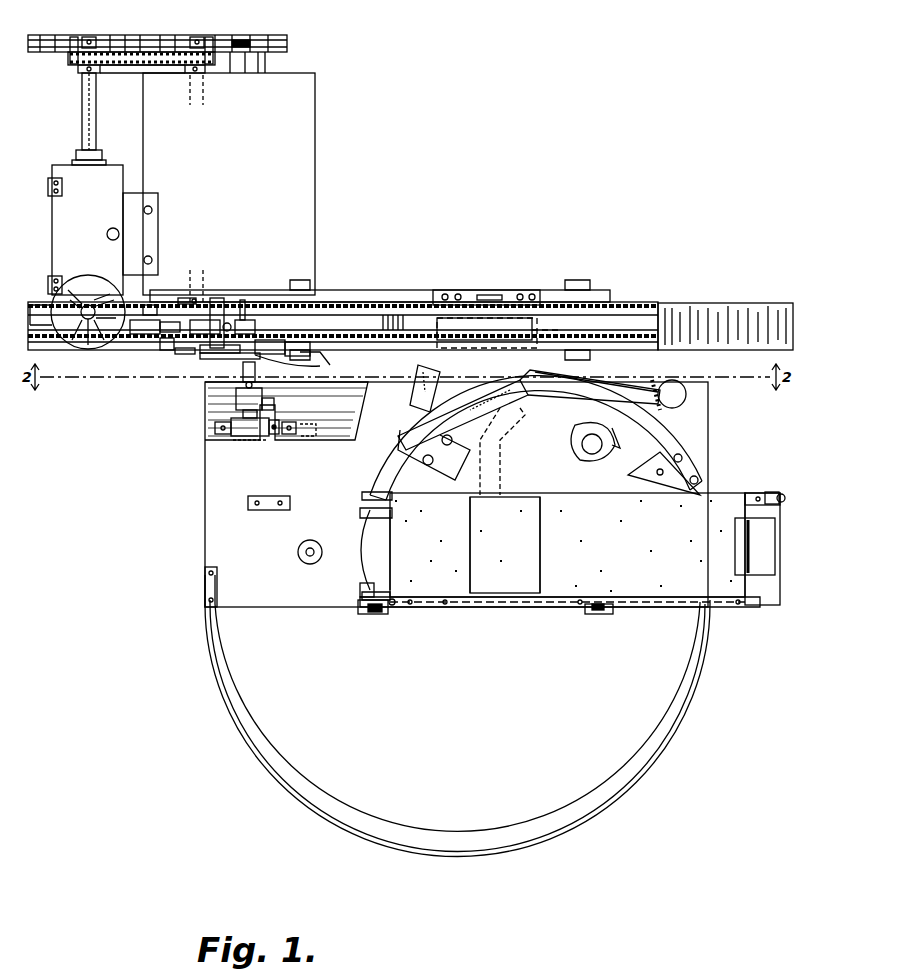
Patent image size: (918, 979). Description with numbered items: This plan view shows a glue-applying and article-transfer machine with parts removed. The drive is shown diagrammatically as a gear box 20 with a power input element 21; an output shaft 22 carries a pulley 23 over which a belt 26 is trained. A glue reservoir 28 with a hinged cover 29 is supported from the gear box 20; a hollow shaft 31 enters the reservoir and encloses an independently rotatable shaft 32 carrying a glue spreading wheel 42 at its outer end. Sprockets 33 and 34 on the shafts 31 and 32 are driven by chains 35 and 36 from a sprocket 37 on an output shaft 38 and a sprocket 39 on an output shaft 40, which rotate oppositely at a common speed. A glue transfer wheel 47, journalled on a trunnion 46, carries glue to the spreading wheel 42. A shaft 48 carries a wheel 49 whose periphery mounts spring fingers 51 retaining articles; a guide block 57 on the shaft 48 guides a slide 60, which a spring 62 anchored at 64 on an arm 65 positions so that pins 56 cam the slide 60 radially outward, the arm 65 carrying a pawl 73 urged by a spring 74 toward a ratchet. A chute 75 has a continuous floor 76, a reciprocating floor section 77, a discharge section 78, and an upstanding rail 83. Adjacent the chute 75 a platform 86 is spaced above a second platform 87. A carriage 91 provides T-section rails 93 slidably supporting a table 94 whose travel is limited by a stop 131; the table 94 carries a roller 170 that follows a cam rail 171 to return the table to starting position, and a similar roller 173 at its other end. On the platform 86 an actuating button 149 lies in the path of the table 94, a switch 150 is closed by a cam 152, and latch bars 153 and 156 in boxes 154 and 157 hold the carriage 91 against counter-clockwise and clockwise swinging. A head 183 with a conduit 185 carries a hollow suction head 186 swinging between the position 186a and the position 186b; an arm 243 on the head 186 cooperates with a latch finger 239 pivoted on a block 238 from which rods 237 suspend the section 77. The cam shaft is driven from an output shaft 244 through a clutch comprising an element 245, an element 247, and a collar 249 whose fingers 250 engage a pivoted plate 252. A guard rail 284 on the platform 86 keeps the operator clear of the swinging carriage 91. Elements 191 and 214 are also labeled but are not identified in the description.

The gear box 20 is at (315, 150).
The power input element 21 is at (287, 44).
The output shaft 22 is at (206, 272).
The pulley 23 is at (184, 298).
The belt 26 is at (152, 305).
The glue reservoir 28 is at (112, 165).
The hinged cover 29 is at (83, 236).
The hollow shaft 31 is at (82, 120).
The independently rotatable shaft 32 is at (90, 37).
The sprocket 33 is at (78, 69).
The sprocket 34 is at (74, 37).
The chain 35 is at (125, 73).
The chain 36 is at (137, 35).
The sprocket 37 is at (190, 73).
The output shaft 38 is at (188, 100).
The sprocket 39 is at (210, 37).
The output shaft 40 is at (197, 37).
The glue spreading wheel 42 is at (66, 345).
The trunnion 46 is at (88, 303).
The glue transfer wheel 47 is at (86, 275).
The shaft 48 is at (220, 298).
The wheel 49 is at (150, 334).
The spring fingers 51 is at (248, 310).
The pins 56 is at (165, 350).
The guide block 57 is at (185, 354).
The slide 60 is at (222, 328).
The spring 62 is at (222, 359).
The spring anchor 64 is at (289, 367).
The arm 65 is at (321, 361).
The pawl 73 is at (300, 344).
The spring 74 is at (280, 342).
The chute 75 is at (370, 285).
The floor 76 is at (343, 320).
The floor section 77 is at (532, 320).
The discharge section 78 is at (705, 303).
The rail 83 is at (420, 302).
The platform 86 is at (708, 434).
The second platform 87 is at (355, 390).
The carriage 91 is at (365, 533).
The rails 93 is at (362, 500).
The table 94 is at (760, 596).
The stop 131 is at (360, 590).
The actuating button 149 is at (302, 560).
The switch 150 is at (308, 436).
The cam 152 is at (272, 434).
The latch bar 153 is at (375, 612).
The box 154 is at (362, 612).
The second latch bar 156 is at (598, 612).
The box 157 is at (585, 610).
The roller 170 is at (781, 493).
The cam rail 171 is at (668, 440).
The roller 173 is at (392, 608).
The head 183 is at (590, 448).
The conduit 185 is at (628, 440).
The suction head 186 is at (474, 412).
The suction head position 186a is at (515, 333).
The suction head position 186b is at (530, 549).
The pivot 191 is at (588, 446).
The plate 214 is at (765, 548).
The rods 237 is at (530, 297).
The block 238 is at (520, 298).
The latch finger 239 is at (489, 295).
The arm 243 is at (445, 370).
The output shaft 244 is at (243, 374).
The clutch element 245 is at (257, 413).
The clutch element 247 is at (236, 398).
The collar 249 is at (240, 436).
The fingers 250 is at (276, 436).
The plate 252 is at (274, 404).
The guard rail 284 is at (487, 857).